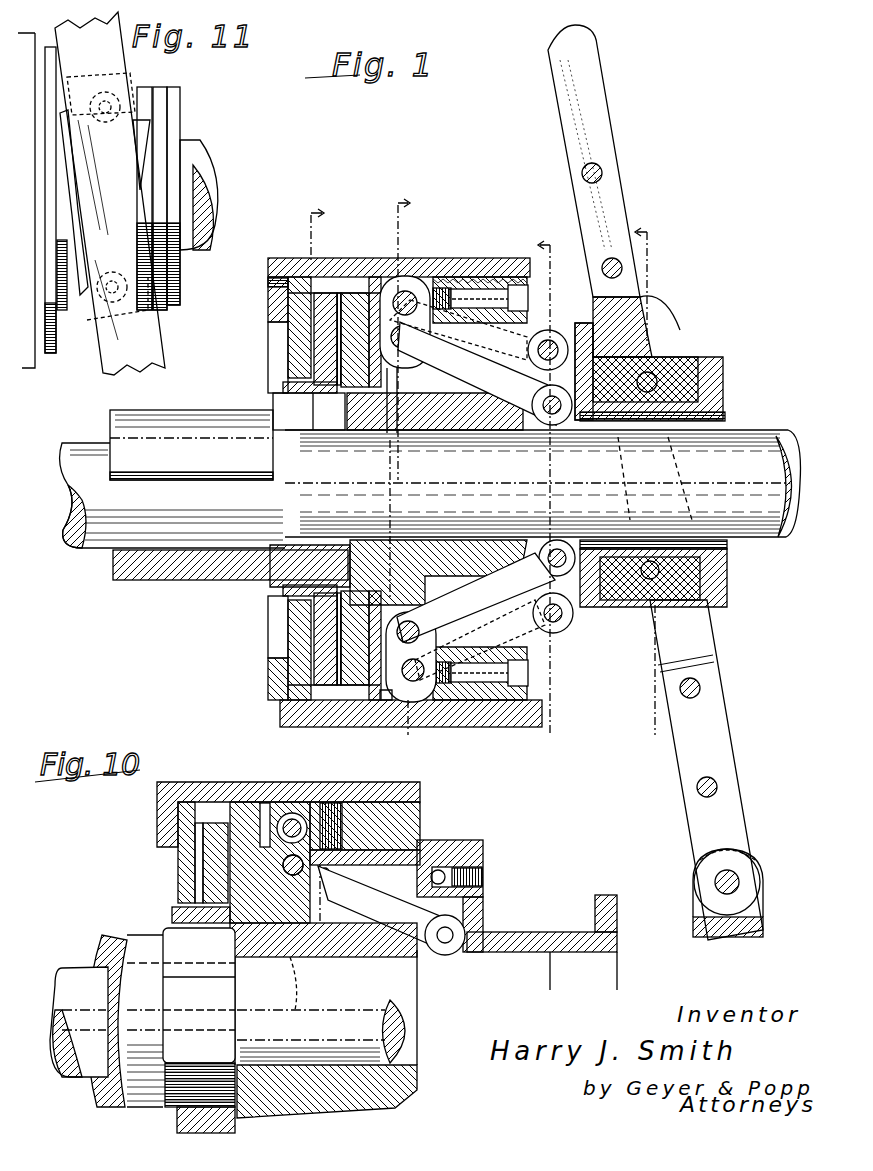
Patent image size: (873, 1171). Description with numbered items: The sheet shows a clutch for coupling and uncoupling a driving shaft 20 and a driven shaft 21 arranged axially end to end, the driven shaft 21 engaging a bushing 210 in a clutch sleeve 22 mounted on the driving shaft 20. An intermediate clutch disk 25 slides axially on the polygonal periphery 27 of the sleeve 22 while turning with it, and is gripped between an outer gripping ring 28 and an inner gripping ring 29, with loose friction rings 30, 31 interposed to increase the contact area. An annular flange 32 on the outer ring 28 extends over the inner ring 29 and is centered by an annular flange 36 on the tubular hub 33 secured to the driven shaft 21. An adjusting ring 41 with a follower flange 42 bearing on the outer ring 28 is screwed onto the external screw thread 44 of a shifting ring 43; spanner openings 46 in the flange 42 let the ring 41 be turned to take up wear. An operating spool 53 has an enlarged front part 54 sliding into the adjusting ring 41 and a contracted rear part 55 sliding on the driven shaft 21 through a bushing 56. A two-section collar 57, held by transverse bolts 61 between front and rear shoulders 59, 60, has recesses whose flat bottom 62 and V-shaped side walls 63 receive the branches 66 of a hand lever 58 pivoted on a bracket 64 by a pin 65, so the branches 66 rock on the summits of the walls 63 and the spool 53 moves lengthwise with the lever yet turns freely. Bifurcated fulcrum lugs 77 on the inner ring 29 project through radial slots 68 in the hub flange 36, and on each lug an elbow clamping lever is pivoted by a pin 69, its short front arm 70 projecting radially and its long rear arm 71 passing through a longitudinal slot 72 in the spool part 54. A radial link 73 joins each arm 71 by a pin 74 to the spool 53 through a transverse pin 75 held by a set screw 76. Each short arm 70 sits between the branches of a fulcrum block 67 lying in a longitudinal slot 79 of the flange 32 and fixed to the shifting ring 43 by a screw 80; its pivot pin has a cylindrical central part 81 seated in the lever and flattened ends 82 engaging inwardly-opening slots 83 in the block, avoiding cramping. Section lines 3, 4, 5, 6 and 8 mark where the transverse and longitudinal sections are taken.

In FIG. 1, the section line 3 is at (308, 227).
In FIG. 10, the section line 3 is at (315, 753).
In FIG. 1, the section line 4 is at (396, 472).
In FIG. 1, the section line 5 is at (551, 485).
In FIG. 1, the section line 6 is at (648, 482).
In FIG. 11, the section line 8 is at (268, 306).
In FIG. 1, the driving shaft 20 is at (172, 495).
In FIG. 10, the driving shaft 20 is at (79, 1022).
In FIG. 11, the driven shaft 21 is at (208, 176).
In FIG. 1, the driven shaft 21 is at (543, 483).
In FIG. 10, the driven shaft 21 is at (408, 1058).
In FIG. 1, the coupling sleeve 22 is at (191, 445).
In FIG. 10, the coupling sleeve 22 is at (95, 955).
In FIG. 1, the intermediate clutch disk 25 is at (284, 597).
In FIG. 10, the intermediate clutch disk 25 is at (210, 929).
In FIG. 10, the polygonal periphery 27 is at (189, 993).
In FIG. 1, the outer gripping ring 28 is at (290, 357).
In FIG. 10, the outer gripping ring 28 is at (178, 870).
In FIG. 1, the inner gripping ring 29 is at (362, 382).
In FIG. 10, the inner gripping ring 29 is at (240, 803).
In FIG. 1, the friction ring 30 is at (302, 262).
In FIG. 10, the friction ring 30 is at (185, 932).
In FIG. 1, the friction ring 31 is at (322, 292).
In FIG. 10, the friction ring 31 is at (216, 993).
In FIG. 1, the annular flange 32 is at (352, 292).
In FIG. 10, the annular flange 32 is at (205, 800).
In FIG. 1, the hub 33 is at (482, 432).
In FIG. 10, the hub 33 is at (405, 1100).
In FIG. 1, the hub flange 36 is at (415, 580).
In FIG. 10, the hub flange 36 is at (308, 1120).
In FIG. 1, the adjusting ring 41 is at (500, 258).
In FIG. 10, the adjusting ring 41 is at (422, 787).
In FIG. 1, the follower flange 42 is at (280, 672).
In FIG. 10, the follower flange 42 is at (157, 830).
In FIG. 11, the shifting ring 43 is at (33, 368).
In FIG. 1, the shifting ring 43 is at (530, 276).
In FIG. 10, the shifting ring 43 is at (422, 806).
In FIG. 1, the external screw thread 44 is at (545, 694).
In FIG. 1, the openings 46 is at (288, 698).
In FIG. 1, the operating spool 53 is at (712, 396).
In FIG. 10, the operating spool 53 is at (542, 957).
In FIG. 11, the enlarged front part 54 is at (61, 209).
In FIG. 1, the enlarged front part 54 is at (476, 616).
In FIG. 10, the enlarged front part 54 is at (396, 870).
In FIG. 11, the rear part 55 is at (167, 125).
In FIG. 1, the rear part 55 is at (726, 416).
In FIG. 10, the rear part 55 is at (617, 928).
In FIG. 1, the bushing 56 is at (730, 544).
In FIG. 10, the bushing 56 is at (618, 958).
In FIG. 11, the collar 57 is at (181, 295).
In FIG. 1, the collar 57 is at (690, 365).
In FIG. 1, the hand lever 58 is at (650, 298).
In FIG. 1, the front shoulder 59 is at (596, 360).
In FIG. 1, the rear shoulder 60 is at (724, 378).
In FIG. 1, the transverse bolts 61 is at (660, 580).
In FIG. 11, the flat bottom 62 is at (138, 120).
In FIG. 11, the V-shaped side walls 63 is at (150, 165).
In FIG. 1, the bracket 64 is at (765, 925).
In FIG. 1, the pin 65 is at (735, 880).
In FIG. 11, the branches 66 is at (110, 193).
In FIG. 1, the branches 66 is at (708, 633).
In FIG. 1, the fulcrum blocks 67 is at (448, 288).
In FIG. 10, the fulcrum blocks 67 is at (335, 800).
In FIG. 10, the radial slot 68 is at (298, 958).
In FIG. 1, the transverse pin 69 is at (406, 344).
In FIG. 10, the transverse pin 69 is at (329, 893).
In FIG. 1, the short front arm 70 is at (410, 280).
In FIG. 1, the long rear arm 71 is at (477, 373).
In FIG. 10, the long rear arm 71 is at (391, 910).
In FIG. 1, the longitudinal slot 72 is at (458, 330).
In FIG. 1, the radial links 73 is at (536, 359).
In FIG. 10, the radial links 73 is at (484, 918).
In FIG. 1, the pin 74 is at (553, 426).
In FIG. 10, the pin 74 is at (446, 944).
In FIG. 1, the transverse pin 75 is at (528, 708).
In FIG. 10, the transverse pin 75 is at (445, 850).
In FIG. 10, the set screw 76 is at (484, 878).
In FIG. 1, the fulcrum lugs 77 is at (392, 436).
In FIG. 10, the fulcrum lugs 77 is at (262, 958).
In FIG. 1, the longitudinal slot 79 is at (388, 706).
In FIG. 1, the screw 80 is at (530, 296).
In FIG. 1, the cylindrical central part 81 is at (416, 702).
In FIG. 10, the flattened ends 82 is at (292, 812).
In FIG. 10, the slots 83 is at (265, 805).
In FIG. 1, the bushing 210 is at (300, 545).